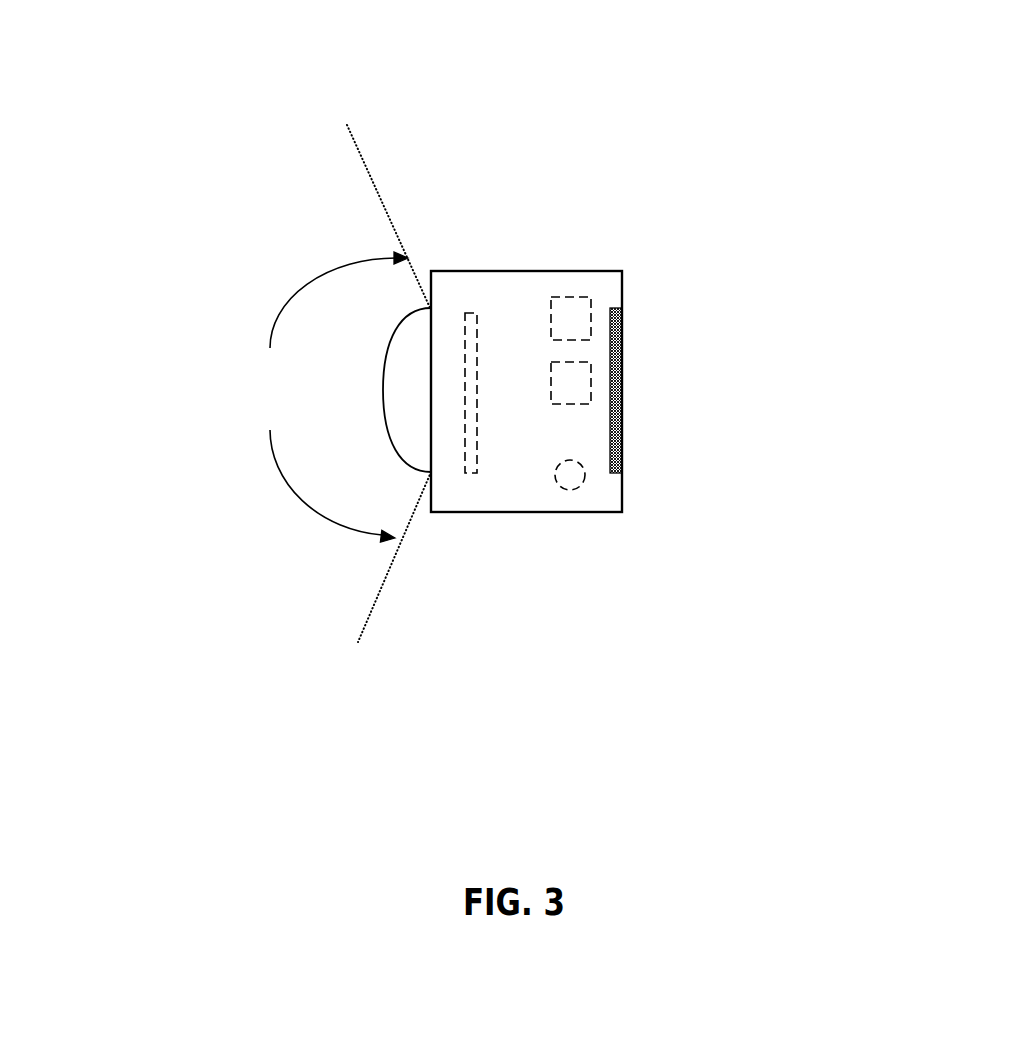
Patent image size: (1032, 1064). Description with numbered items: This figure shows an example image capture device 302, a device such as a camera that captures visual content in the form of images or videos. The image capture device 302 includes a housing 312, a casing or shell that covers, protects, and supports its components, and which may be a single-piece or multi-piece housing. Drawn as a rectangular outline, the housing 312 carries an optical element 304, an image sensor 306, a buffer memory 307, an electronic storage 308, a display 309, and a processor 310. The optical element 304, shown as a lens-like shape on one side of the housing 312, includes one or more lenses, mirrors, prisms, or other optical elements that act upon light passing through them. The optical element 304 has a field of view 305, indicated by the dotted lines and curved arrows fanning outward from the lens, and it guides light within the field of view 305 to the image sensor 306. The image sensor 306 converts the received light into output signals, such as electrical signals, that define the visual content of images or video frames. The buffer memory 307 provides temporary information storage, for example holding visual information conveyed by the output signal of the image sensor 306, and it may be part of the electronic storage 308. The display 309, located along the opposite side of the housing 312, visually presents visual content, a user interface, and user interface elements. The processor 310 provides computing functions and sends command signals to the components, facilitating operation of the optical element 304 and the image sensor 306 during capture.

The image capture device 302 is at (590, 126).
The optical element 304 is at (431, 473).
The field of view 305 is at (304, 383).
The image sensor 306 is at (471, 312).
The buffer memory 307 is at (572, 297).
The electronic storage 308 is at (592, 367).
The display 309 is at (623, 397).
The processor 310 is at (567, 490).
The housing 312 is at (485, 512).